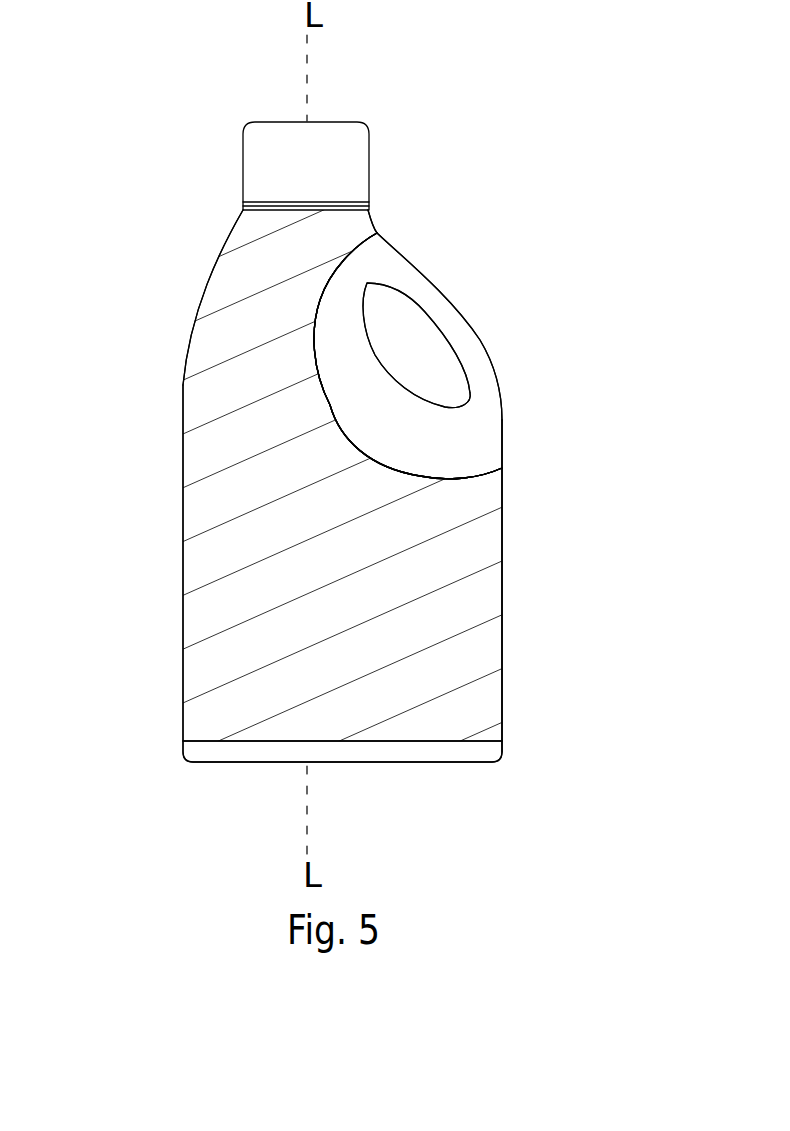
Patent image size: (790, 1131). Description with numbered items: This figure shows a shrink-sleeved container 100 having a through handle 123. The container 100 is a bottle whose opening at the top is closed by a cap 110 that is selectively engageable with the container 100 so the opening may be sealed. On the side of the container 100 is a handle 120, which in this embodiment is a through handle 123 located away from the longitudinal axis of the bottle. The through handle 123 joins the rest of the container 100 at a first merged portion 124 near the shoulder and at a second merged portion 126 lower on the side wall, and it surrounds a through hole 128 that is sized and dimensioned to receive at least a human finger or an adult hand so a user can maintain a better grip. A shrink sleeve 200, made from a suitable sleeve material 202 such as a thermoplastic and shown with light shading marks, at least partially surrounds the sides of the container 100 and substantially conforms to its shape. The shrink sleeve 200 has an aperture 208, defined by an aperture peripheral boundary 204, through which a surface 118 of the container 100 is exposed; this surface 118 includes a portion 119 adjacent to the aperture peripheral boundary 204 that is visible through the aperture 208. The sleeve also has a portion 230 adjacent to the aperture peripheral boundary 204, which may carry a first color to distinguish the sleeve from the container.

The container 100 is at (182, 280).
The cap 110 is at (357, 162).
The surface 118 is at (425, 307).
The portion 119 is at (352, 260).
The handle 120 is at (480, 327).
The through handle 123 is at (473, 357).
The first merged portion 124 is at (413, 253).
The second merged portion 126 is at (513, 438).
The through hole 128 is at (440, 392).
The shrink sleeve 200 is at (502, 563).
The sleeve material 202 is at (258, 658).
The aperture peripheral boundary 204 is at (428, 477).
The aperture 208 is at (323, 402).
The portion 230 is at (333, 248).